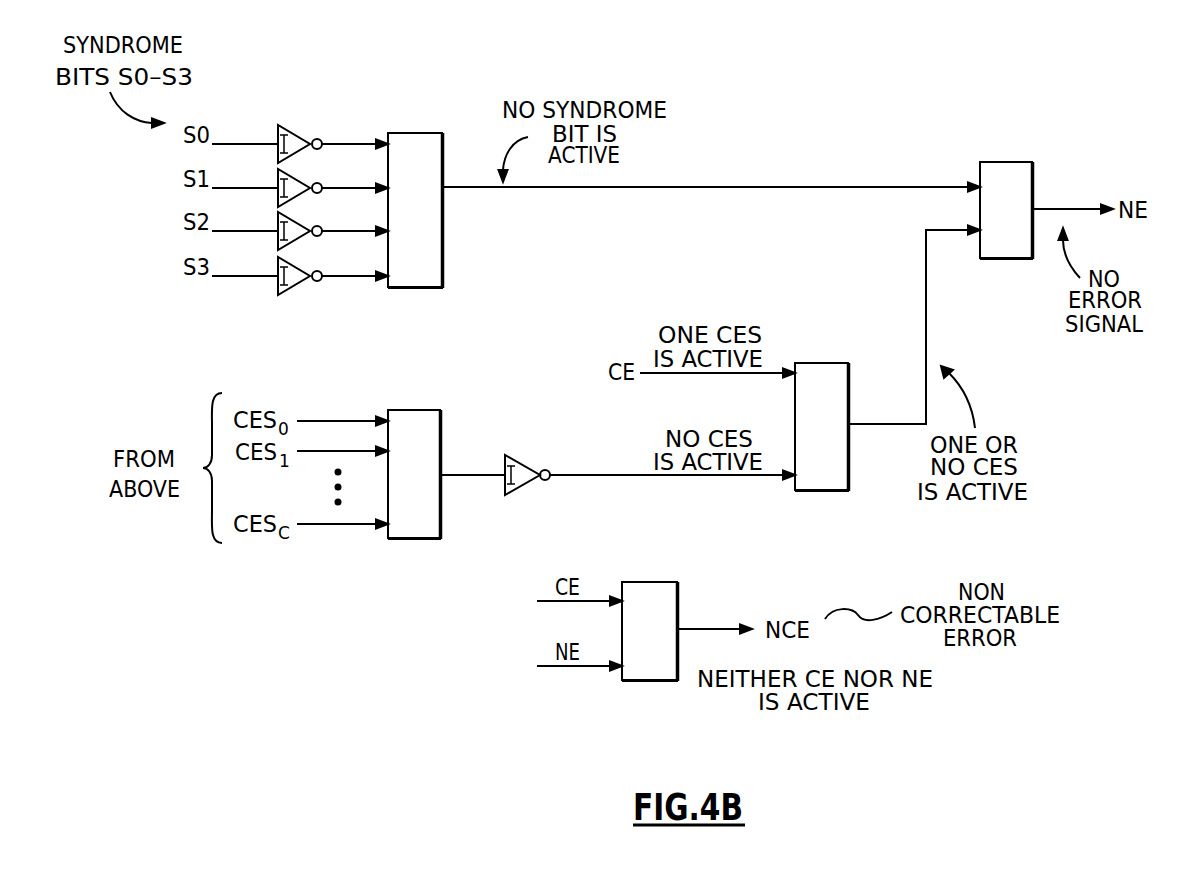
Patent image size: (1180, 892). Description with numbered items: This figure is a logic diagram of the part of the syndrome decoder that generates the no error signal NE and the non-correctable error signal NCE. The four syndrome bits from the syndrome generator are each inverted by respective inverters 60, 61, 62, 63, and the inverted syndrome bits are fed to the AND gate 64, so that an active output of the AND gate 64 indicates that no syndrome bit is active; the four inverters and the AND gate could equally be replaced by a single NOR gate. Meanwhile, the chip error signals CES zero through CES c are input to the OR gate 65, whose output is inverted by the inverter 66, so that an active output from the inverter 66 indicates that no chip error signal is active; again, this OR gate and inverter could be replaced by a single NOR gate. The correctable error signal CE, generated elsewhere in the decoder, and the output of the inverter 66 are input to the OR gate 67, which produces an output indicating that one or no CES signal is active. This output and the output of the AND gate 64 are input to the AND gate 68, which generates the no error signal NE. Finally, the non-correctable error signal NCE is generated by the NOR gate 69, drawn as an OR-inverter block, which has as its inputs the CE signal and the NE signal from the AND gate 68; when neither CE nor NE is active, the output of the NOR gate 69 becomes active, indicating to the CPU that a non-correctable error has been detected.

The inverter 60 is at (300, 137).
The inverter 61 is at (300, 181).
The inverter 62 is at (300, 224).
The inverter 63 is at (300, 269).
The AND gate 64 is at (410, 133).
The OR gate 65 is at (406, 410).
The inverter 66 is at (527, 467).
The OR gate 67 is at (812, 363).
The AND gate 68 is at (997, 162).
The NOR gate 69 is at (640, 582).